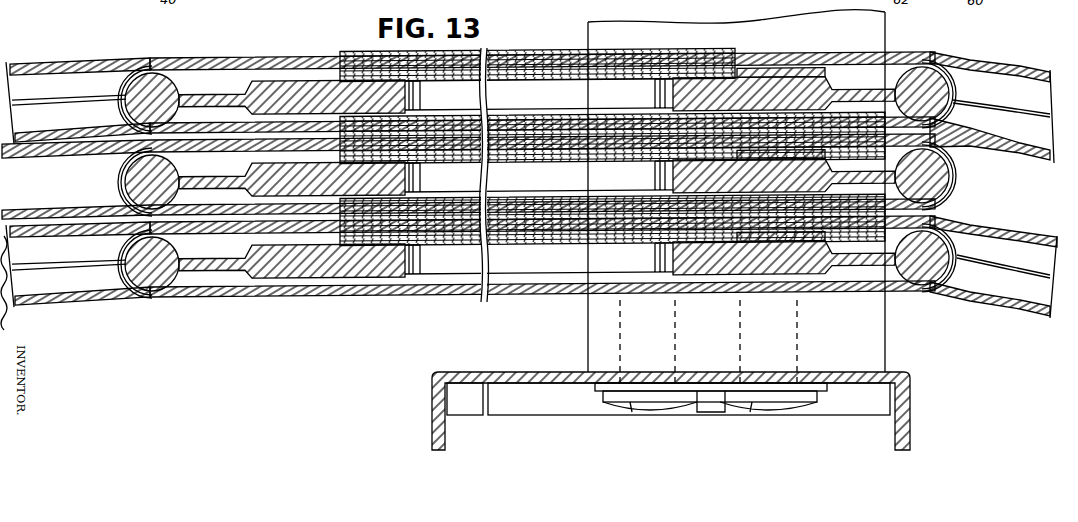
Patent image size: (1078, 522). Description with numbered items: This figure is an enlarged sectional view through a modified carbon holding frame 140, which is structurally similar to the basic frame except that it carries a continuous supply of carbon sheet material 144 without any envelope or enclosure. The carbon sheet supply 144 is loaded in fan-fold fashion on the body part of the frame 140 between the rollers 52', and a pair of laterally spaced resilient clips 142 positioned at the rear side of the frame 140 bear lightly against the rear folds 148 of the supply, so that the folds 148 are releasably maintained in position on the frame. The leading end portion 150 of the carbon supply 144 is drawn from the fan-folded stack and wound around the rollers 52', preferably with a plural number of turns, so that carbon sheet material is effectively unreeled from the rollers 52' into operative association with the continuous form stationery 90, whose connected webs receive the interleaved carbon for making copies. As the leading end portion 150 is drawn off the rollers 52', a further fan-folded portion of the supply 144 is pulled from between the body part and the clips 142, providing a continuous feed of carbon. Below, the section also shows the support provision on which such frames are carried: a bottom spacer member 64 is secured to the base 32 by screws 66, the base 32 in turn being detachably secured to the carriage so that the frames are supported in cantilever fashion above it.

The leading end portion 150 is at (70, 63).
The continuous form stationery 90 is at (115, 58).
The carbon holding frame 140 is at (317, 80).
The continuous supply of carbon sheet material 144 is at (555, 72).
The resilient clips 142 is at (637, 58).
The rear folds 148 is at (735, 70).
The rollers 52' is at (553, 179).
The bottom spacer member 64 is at (880, 339).
The base 32 is at (574, 372).
The screws 66 is at (717, 413).